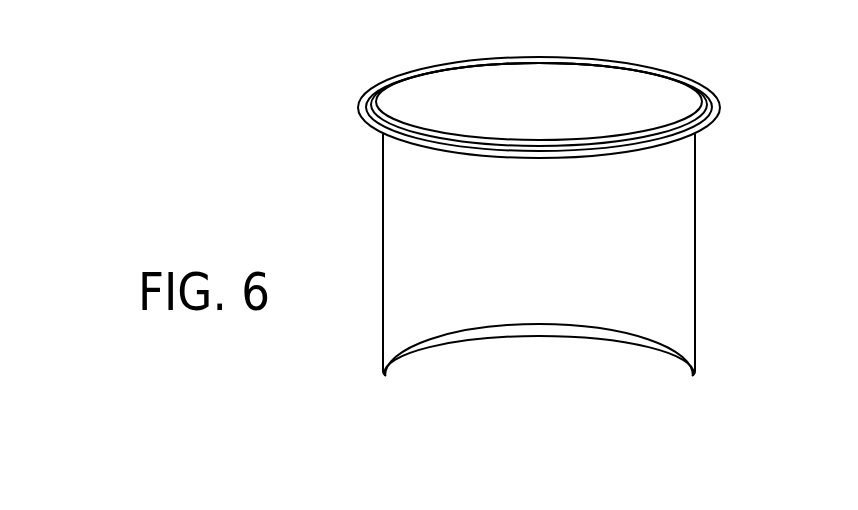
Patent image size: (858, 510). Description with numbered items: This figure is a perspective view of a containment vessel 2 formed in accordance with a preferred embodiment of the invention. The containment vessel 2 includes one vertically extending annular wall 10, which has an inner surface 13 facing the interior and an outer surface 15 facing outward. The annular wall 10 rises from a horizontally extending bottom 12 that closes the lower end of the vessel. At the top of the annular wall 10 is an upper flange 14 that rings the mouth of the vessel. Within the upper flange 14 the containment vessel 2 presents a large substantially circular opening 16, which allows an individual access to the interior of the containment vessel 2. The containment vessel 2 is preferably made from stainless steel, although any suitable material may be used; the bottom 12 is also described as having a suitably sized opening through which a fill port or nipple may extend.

The containment vessel 2 is at (551, 231).
The annular wall 10 is at (542, 255).
The bottom 12 is at (423, 413).
The inner surface 13 is at (430, 87).
The upper flange 14 is at (599, 83).
The outer surface 15 is at (407, 193).
The circular opening 16 is at (622, 100).